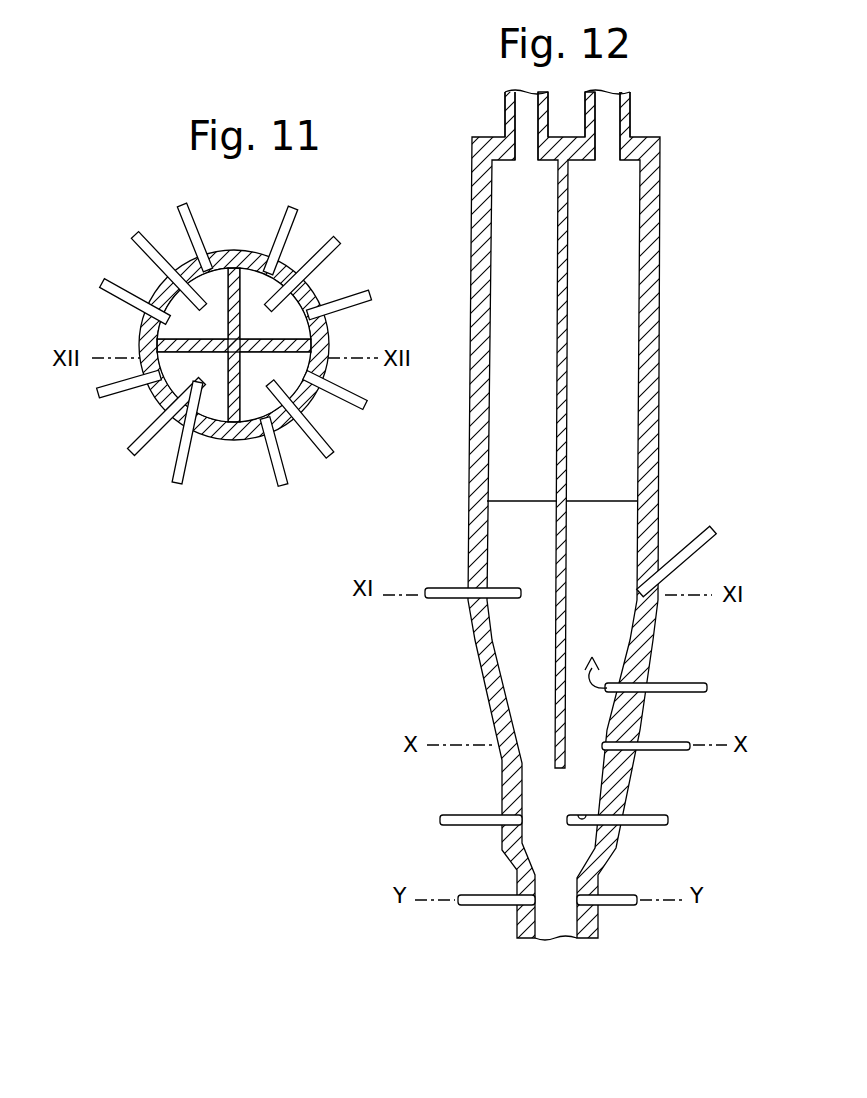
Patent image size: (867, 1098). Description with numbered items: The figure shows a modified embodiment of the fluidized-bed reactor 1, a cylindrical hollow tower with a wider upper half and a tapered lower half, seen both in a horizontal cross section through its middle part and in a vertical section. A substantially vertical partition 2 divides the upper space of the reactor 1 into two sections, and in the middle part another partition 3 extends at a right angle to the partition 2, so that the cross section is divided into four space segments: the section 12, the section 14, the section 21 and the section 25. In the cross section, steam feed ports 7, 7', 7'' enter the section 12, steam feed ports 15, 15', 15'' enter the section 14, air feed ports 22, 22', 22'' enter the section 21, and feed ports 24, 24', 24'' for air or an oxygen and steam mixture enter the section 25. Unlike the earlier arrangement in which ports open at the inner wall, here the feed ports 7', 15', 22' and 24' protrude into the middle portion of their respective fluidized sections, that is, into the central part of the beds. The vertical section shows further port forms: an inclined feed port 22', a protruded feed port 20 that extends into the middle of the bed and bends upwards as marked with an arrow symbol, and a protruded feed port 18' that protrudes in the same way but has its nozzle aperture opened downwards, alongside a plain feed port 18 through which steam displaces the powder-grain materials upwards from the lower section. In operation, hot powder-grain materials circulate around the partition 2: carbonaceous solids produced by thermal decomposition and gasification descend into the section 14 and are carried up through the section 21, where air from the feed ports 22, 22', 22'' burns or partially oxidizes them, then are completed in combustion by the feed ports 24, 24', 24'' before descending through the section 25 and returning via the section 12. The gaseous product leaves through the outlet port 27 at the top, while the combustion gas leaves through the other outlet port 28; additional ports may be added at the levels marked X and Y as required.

In FIG. 11, the reactor 1 is at (138, 343).
In FIG. 12, the reactor 1 is at (472, 191).
In FIG. 11, the partition 2 is at (226, 290).
In FIG. 12, the partition 2 is at (558, 238).
In FIG. 11, the partition 3 is at (181, 353).
In FIG. 12, the partition 3 is at (520, 500).
In FIG. 11, the feed port 7 is at (135, 283).
In FIG. 11, the feed port 7' is at (168, 259).
In FIG. 11, the feed port 7'' is at (164, 220).
In FIG. 11, the section 12 is at (150, 322).
In FIG. 11, the section 14 is at (215, 398).
In FIG. 11, the steam feed port 15 is at (129, 404).
In FIG. 12, the steam feed port 15 is at (473, 570).
In FIG. 11, the steam feed port 15' is at (165, 442).
In FIG. 11, the steam feed port 15'' is at (196, 455).
In FIG. 12, the feed port 18 is at (481, 801).
In FIG. 12, the protruded feed port 18' is at (623, 801).
In FIG. 12, the protruded feed port 20 is at (688, 684).
In FIG. 11, the section 21 is at (300, 372).
In FIG. 11, the air feed port 22 is at (275, 471).
In FIG. 11, the air feed port 22' is at (307, 438).
In FIG. 12, the air feed port 22' is at (677, 546).
In FIG. 11, the air feed port 22'' is at (369, 390).
In FIG. 11, the feed port 24 is at (299, 230).
In FIG. 11, the feed port 24' is at (330, 269).
In FIG. 11, the feed port 24'' is at (368, 303).
In FIG. 11, the section 25 is at (295, 331).
In FIG. 12, the outlet port 27 is at (505, 113).
In FIG. 12, the outlet port 28 is at (630, 113).